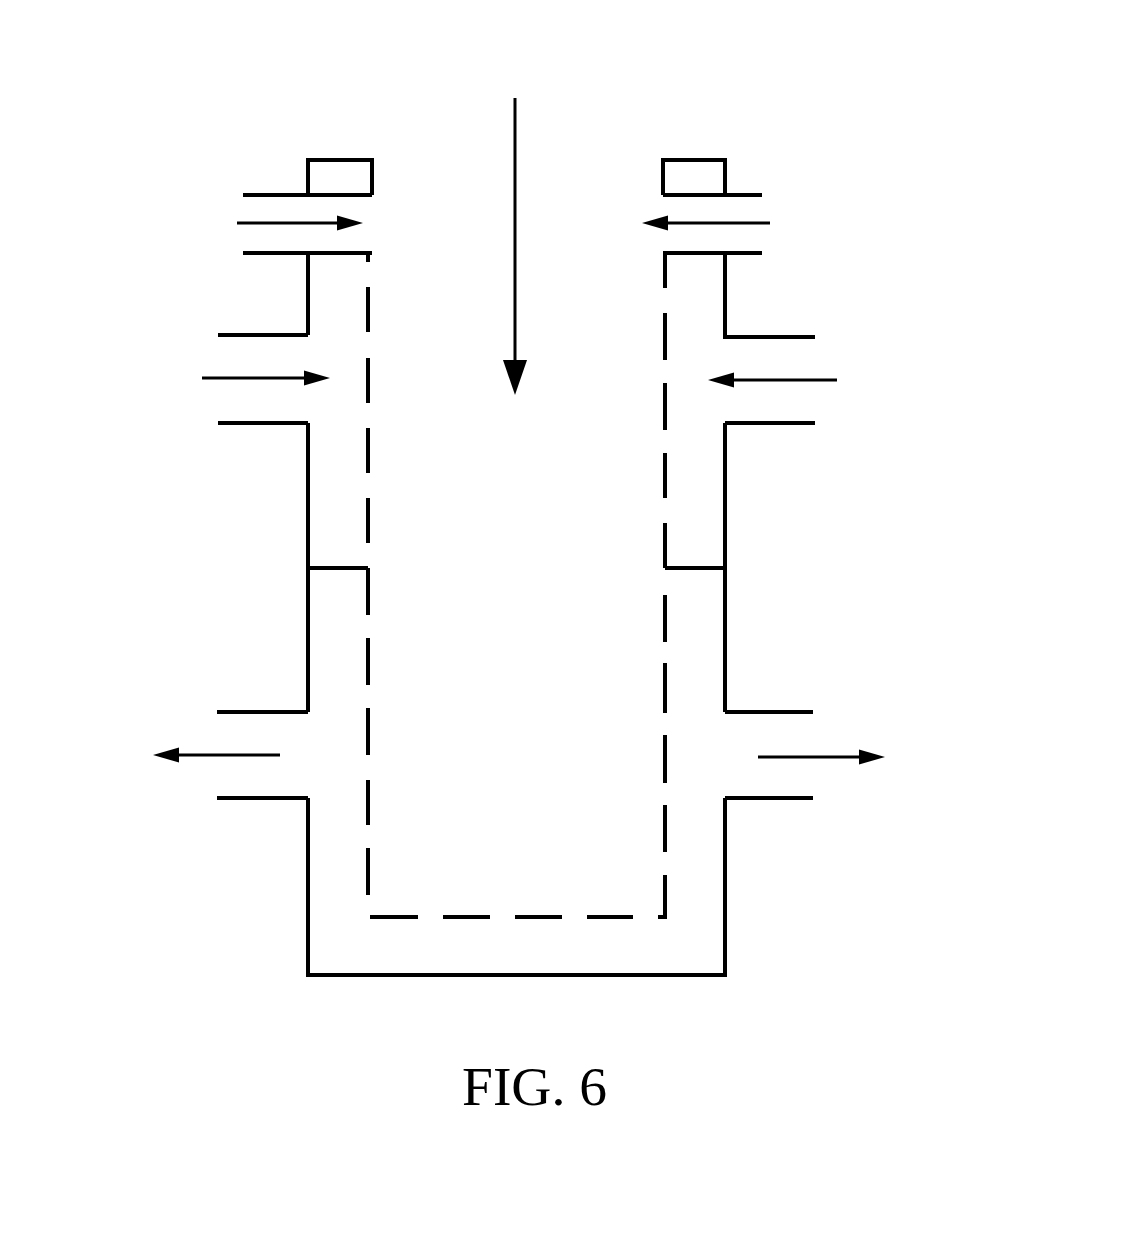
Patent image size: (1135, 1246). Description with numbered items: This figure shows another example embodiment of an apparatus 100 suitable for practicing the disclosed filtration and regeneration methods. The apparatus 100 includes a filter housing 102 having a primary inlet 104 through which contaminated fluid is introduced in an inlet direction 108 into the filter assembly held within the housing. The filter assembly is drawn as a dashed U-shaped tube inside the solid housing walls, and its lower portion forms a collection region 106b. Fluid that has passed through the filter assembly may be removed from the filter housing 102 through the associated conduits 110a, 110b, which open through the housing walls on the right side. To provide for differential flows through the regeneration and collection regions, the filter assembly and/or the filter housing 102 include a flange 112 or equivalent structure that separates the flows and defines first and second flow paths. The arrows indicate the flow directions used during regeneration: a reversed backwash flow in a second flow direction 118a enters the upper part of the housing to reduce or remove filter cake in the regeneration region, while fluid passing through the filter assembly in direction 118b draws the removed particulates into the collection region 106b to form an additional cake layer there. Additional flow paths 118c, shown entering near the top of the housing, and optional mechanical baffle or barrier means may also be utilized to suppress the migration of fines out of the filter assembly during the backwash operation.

The apparatus 100 is at (843, 69).
The filter housing 102 is at (698, 158).
The primary inlet 104 is at (453, 167).
The collection region 106b is at (367, 727).
The inlet direction 108 is at (518, 138).
The conduit 110a is at (752, 352).
The conduit 110b is at (770, 732).
The flange 112 is at (690, 567).
The second flow direction 118a is at (245, 378).
The direction 118b is at (212, 755).
The additional flow paths 118c is at (285, 223).